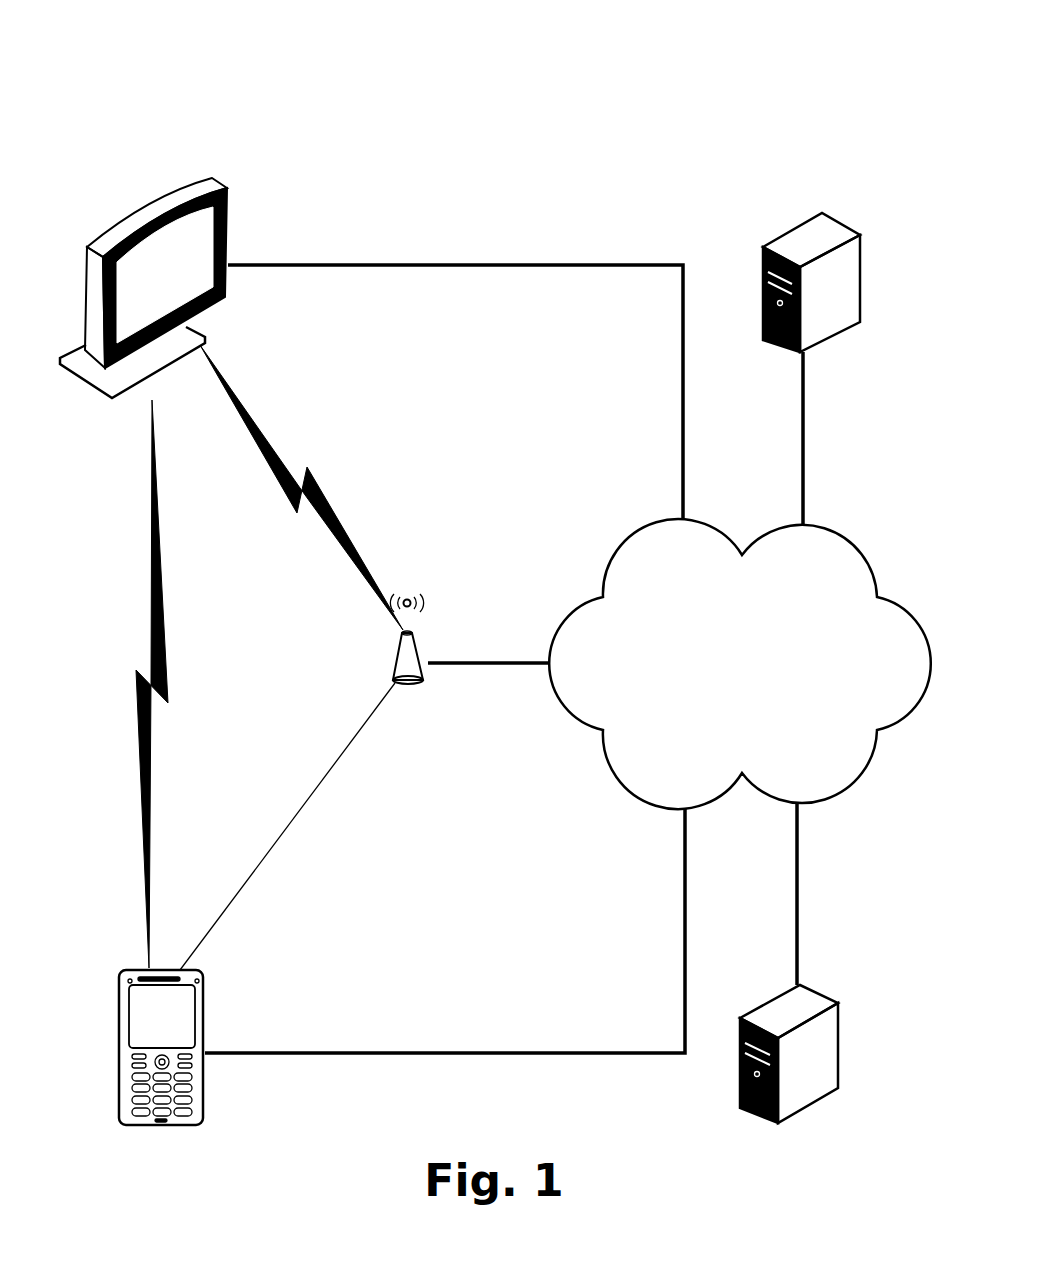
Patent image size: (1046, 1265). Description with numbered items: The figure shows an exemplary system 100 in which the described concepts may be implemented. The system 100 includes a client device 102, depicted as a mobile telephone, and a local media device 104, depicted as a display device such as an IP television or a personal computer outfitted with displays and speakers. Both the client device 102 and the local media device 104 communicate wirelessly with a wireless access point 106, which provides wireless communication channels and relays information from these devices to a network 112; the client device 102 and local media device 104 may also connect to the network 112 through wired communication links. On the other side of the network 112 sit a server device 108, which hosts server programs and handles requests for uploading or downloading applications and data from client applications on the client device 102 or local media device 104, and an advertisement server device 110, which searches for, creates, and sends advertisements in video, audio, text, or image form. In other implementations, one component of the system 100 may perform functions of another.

The system 100 is at (501, 108).
The client device 102 is at (205, 1007).
The local media device 104 is at (150, 215).
The wireless access point 106 is at (408, 632).
The server device 108 is at (803, 223).
The advertisement server device 110 is at (838, 1053).
The network 112 is at (633, 547).